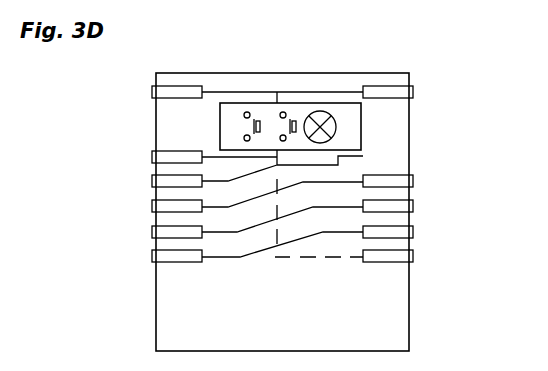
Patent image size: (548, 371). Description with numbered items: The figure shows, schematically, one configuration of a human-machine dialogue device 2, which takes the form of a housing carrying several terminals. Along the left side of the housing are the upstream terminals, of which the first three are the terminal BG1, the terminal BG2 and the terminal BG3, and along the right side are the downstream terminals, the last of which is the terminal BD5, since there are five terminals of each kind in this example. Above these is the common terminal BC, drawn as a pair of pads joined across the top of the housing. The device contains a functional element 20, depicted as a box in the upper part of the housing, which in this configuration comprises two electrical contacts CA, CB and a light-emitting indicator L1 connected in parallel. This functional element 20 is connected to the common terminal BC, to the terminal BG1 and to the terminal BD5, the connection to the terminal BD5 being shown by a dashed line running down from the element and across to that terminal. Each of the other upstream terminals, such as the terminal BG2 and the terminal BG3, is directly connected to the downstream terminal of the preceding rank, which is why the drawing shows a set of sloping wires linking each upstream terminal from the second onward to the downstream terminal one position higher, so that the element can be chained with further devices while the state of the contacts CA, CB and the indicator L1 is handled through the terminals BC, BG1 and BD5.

The human-machine dialogue device 2 is at (155, 133).
The functional element 20 is at (294, 90).
The common terminal BC is at (413, 92).
The upstream terminal BG1 is at (153, 159).
The upstream terminal BG2 is at (153, 183).
The upstream terminal BG3 is at (153, 212).
The downstream terminal BD5 is at (413, 257).
The light-emitting indicator L1 is at (331, 127).
The electrical contact CA is at (242, 126).
The electrical contact CB is at (279, 126).